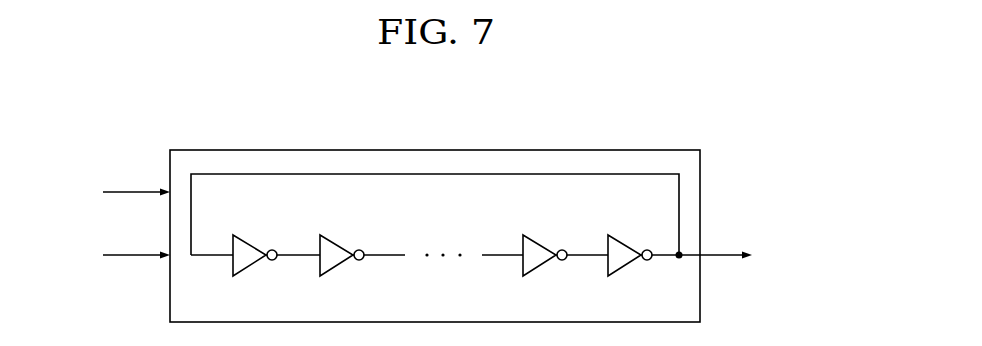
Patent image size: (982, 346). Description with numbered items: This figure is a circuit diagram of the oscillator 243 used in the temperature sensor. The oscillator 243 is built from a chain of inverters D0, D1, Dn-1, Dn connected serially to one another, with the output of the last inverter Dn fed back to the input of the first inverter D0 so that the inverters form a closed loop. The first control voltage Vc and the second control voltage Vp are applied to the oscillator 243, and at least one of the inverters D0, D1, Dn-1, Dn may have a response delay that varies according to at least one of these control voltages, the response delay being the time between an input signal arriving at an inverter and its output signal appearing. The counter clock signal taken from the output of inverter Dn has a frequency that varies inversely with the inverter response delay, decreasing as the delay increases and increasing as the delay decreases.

The oscillator 243 is at (496, 215).
The inverter D0 is at (255, 273).
The inverter D1 is at (342, 273).
The inverter Dn-1 is at (544, 273).
The inverter Dn is at (630, 273).
The first control voltage Vc is at (121, 192).
The second control voltage Vp is at (121, 255).